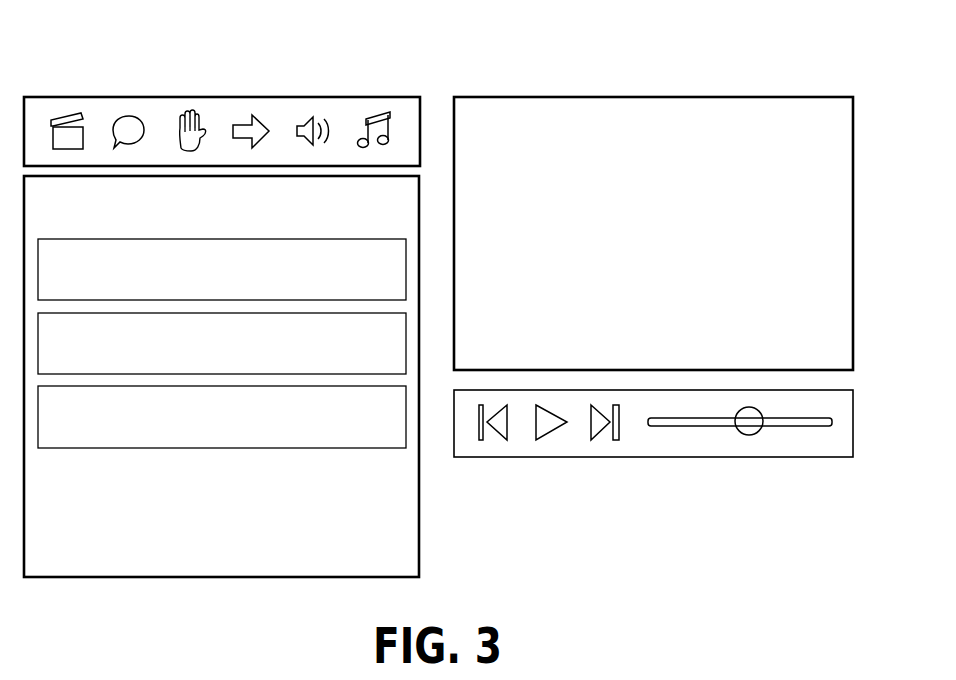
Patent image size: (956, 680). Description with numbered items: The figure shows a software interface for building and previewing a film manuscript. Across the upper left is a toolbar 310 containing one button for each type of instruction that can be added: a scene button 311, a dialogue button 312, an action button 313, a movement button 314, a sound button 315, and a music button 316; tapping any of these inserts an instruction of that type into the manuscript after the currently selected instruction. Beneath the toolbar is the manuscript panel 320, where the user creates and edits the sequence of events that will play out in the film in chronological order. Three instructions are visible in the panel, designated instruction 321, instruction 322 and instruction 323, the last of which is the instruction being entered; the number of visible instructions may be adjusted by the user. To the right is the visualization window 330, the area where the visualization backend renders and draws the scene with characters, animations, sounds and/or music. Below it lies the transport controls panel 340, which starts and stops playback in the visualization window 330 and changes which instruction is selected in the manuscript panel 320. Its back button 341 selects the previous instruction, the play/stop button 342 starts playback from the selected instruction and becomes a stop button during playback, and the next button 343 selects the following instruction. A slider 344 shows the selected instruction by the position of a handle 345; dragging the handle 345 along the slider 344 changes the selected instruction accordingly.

The toolbar 310 is at (239, 97).
The scene button 311 is at (62, 115).
The dialogue button 312 is at (131, 117).
The action button 313 is at (196, 114).
The movement button 314 is at (258, 119).
The sound button 315 is at (309, 121).
The music button 316 is at (381, 113).
The manuscript panel 320 is at (196, 578).
The instruction 321 is at (296, 239).
The instruction 322 is at (280, 313).
The instruction 323 is at (287, 386).
The visualization window 330 is at (617, 97).
The transport controls panel 340 is at (645, 458).
The back button 341 is at (484, 441).
The play/stop button 342 is at (547, 436).
The next button 343 is at (597, 438).
The slider 344 is at (690, 427).
The handle 345 is at (758, 434).